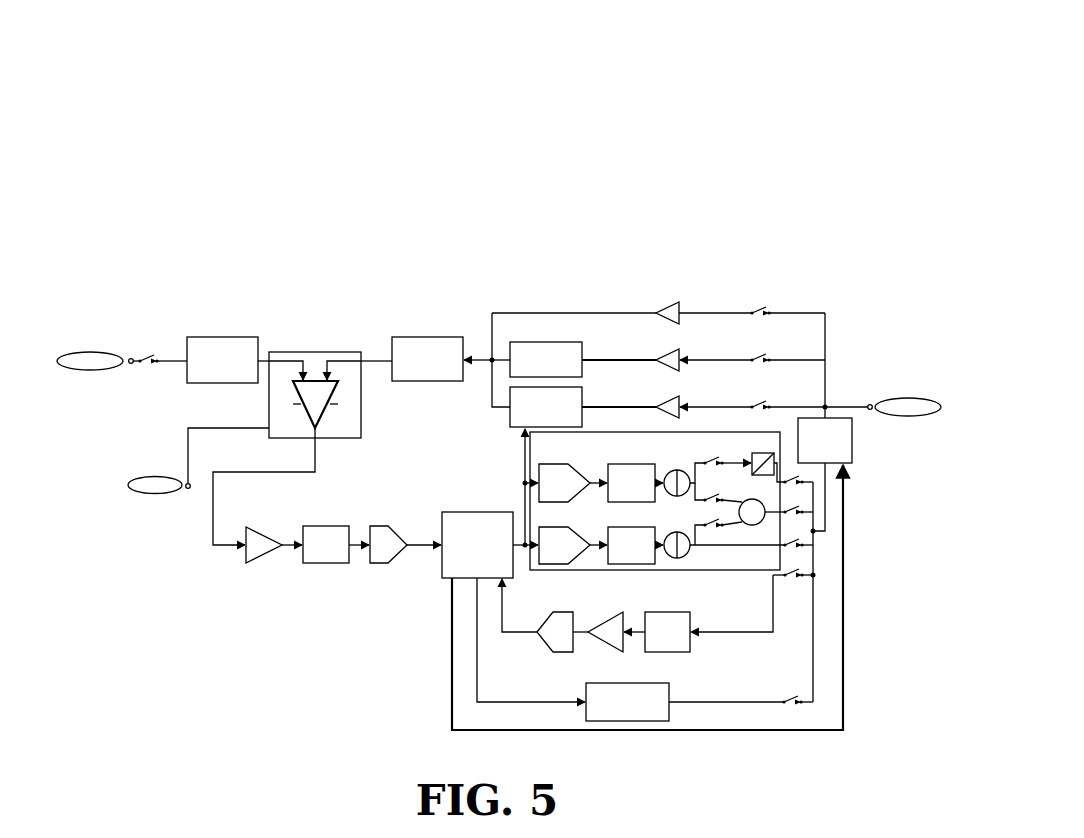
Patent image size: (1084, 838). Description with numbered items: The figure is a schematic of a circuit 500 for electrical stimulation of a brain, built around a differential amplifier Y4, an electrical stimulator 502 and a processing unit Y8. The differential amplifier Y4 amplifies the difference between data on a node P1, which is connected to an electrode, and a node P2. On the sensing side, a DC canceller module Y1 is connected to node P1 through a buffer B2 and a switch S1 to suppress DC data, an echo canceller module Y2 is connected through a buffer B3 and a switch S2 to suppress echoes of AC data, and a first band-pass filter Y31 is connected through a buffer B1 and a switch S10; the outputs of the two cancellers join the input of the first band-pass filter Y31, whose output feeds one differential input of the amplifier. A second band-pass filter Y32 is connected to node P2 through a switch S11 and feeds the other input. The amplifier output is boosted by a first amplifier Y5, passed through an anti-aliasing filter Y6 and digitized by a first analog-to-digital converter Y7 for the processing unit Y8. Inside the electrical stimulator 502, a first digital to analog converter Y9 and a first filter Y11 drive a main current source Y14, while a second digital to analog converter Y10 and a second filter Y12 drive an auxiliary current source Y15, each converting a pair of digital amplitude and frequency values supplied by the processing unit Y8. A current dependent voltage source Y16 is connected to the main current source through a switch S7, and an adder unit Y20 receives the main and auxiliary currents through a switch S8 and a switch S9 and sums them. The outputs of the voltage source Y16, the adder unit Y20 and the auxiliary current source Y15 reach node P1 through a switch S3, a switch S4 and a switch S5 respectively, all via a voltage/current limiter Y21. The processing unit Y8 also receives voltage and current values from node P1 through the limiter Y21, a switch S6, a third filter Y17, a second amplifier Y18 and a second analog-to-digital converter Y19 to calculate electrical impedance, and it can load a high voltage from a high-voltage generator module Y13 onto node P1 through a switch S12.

The circuit 500 is at (756, 44).
The electrical stimulator 502 is at (657, 526).
The node P1 is at (904, 396).
The node P2 is at (122, 355).
The DC canceller module Y1 is at (546, 351).
The echo canceller module Y2 is at (557, 405).
The differential amplifier Y4 is at (315, 407).
The first amplifier Y5 is at (263, 547).
The anti-aliasing filter Y6 is at (326, 536).
The first analog-to-digital converter Y7 is at (388, 536).
The processing unit Y8 is at (477, 536).
The first digital to analog converter Y9 is at (564, 475).
The second digital to analog converter Y10 is at (564, 537).
The first filter Y11 is at (631, 475).
The second filter Y12 is at (631, 537).
The high-voltage generator module Y13 is at (627, 694).
The main current source Y14 is at (677, 477).
The auxiliary current source Y15 is at (677, 535).
The current dependent voltage source Y16 is at (764, 457).
The third filter Y17 is at (667, 623).
The second amplifier Y18 is at (605, 623).
The second analog-to-digital converter Y19 is at (555, 622).
The adder unit Y20 is at (750, 505).
The voltage/current limiter Y21 is at (835, 440).
The first band-pass filter Y31 is at (427, 350).
The second band-pass filter Y32 is at (222, 351).
The buffer B1 is at (667, 304).
The buffer B2 is at (667, 351).
The buffer B3 is at (667, 398).
The switch S1 is at (761, 351).
The switch S2 is at (761, 398).
The switch S3 is at (798, 488).
The switch S4 is at (798, 518).
The switch S5 is at (798, 551).
The switch S6 is at (793, 582).
The switch S7 is at (713, 469).
The switch S8 is at (713, 505).
The switch S9 is at (713, 530).
The switch S10 is at (763, 303).
The switch S11 is at (162, 368).
The switch S12 is at (797, 708).